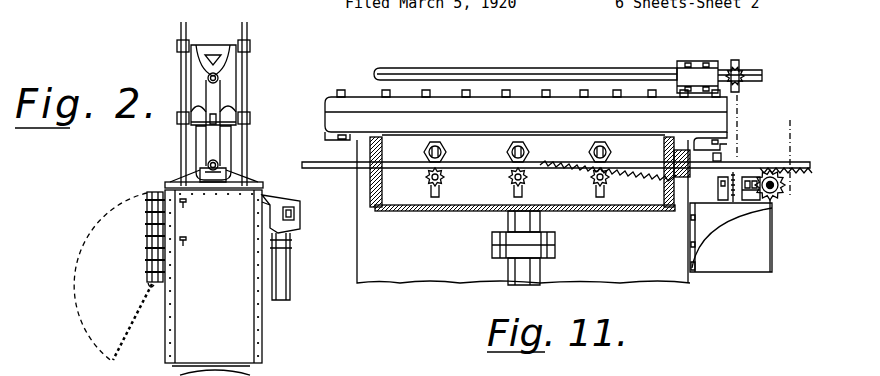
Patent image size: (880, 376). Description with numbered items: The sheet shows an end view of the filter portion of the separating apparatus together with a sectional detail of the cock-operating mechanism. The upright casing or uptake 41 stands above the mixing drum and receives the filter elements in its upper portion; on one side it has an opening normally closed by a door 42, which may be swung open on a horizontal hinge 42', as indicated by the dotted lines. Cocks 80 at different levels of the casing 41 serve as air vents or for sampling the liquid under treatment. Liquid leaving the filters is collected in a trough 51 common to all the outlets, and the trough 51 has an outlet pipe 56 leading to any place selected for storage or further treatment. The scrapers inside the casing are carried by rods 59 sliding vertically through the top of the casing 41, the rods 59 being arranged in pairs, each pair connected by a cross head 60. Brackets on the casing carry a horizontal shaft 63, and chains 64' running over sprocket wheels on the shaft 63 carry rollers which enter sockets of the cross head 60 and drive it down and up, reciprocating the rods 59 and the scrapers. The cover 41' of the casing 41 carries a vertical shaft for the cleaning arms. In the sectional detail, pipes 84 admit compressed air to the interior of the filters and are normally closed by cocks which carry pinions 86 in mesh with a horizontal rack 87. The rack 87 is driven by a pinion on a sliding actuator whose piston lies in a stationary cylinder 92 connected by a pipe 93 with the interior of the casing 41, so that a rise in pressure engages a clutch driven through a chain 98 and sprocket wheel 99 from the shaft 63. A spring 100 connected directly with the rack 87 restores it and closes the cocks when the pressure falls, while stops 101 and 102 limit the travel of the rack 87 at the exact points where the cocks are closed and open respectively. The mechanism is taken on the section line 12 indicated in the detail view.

In FIG. 11, the rack bar 12 is at (791, 143).
In FIG. 2, the upright casing or uptake 41 is at (213, 282).
In FIG. 11, the upright casing or uptake 41 is at (523, 211).
In FIG. 2, the cover of the casing 41' is at (226, 170).
In FIG. 11, the cover of the casing 41' is at (295, 142).
In FIG. 2, the door 42 is at (119, 277).
In FIG. 2, the horizontal hinge 42' is at (164, 315).
In FIG. 2, the trough 51 is at (297, 222).
In FIG. 11, the trough 51 is at (392, 212).
In FIG. 2, the outlet pipe 56 is at (286, 272).
In FIG. 11, the outlet pipe 56 is at (545, 270).
In FIG. 2, the rods 59 is at (247, 78).
In FIG. 2, the cross head 60 is at (236, 116).
In FIG. 2, the shaft 63 is at (208, 161).
In FIG. 11, the shaft 63 is at (478, 72).
In FIG. 2, the chains 64' is at (218, 112).
In FIG. 2, the cocks 80 is at (190, 242).
In FIG. 11, the pipes 84 is at (440, 184).
In FIG. 11, the pinions 86 is at (447, 177).
In FIG. 2, the horizontal rack 87 is at (296, 202).
In FIG. 11, the horizontal rack 87 is at (555, 164).
In FIG. 11, the stationary cylinder 92 is at (786, 189).
In FIG. 11, the pipe 93 is at (765, 275).
In FIG. 11, the chain 98 is at (741, 112).
In FIG. 11, the sprocket wheel 99 is at (738, 62).
In FIG. 11, the spring 100 is at (652, 166).
In FIG. 11, the stop 101 is at (667, 180).
In FIG. 11, the stop 102 is at (719, 153).